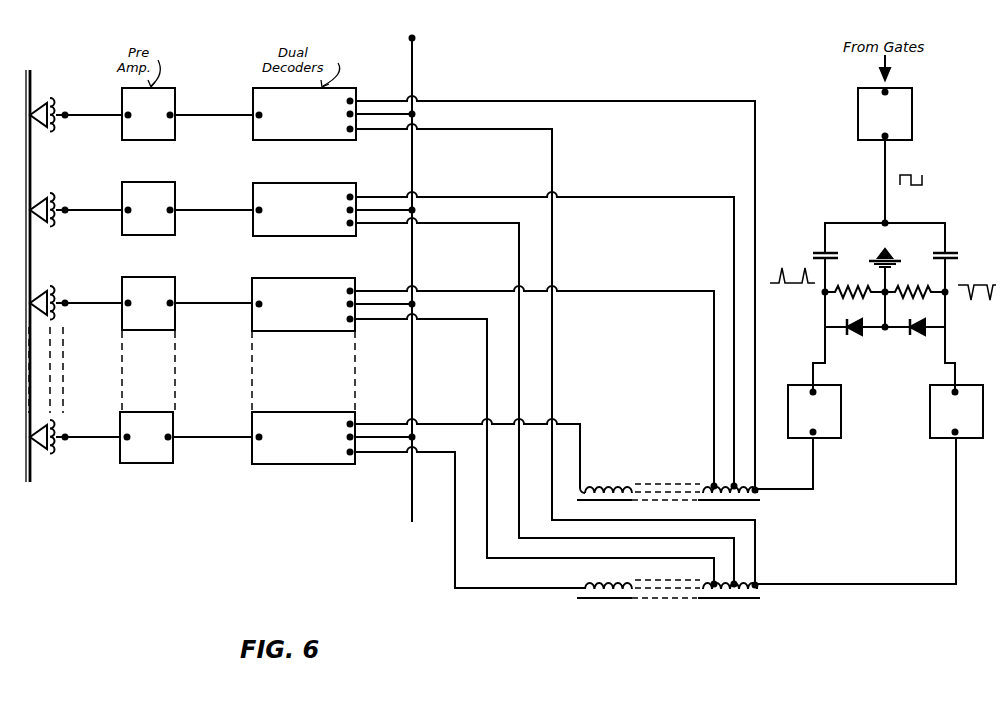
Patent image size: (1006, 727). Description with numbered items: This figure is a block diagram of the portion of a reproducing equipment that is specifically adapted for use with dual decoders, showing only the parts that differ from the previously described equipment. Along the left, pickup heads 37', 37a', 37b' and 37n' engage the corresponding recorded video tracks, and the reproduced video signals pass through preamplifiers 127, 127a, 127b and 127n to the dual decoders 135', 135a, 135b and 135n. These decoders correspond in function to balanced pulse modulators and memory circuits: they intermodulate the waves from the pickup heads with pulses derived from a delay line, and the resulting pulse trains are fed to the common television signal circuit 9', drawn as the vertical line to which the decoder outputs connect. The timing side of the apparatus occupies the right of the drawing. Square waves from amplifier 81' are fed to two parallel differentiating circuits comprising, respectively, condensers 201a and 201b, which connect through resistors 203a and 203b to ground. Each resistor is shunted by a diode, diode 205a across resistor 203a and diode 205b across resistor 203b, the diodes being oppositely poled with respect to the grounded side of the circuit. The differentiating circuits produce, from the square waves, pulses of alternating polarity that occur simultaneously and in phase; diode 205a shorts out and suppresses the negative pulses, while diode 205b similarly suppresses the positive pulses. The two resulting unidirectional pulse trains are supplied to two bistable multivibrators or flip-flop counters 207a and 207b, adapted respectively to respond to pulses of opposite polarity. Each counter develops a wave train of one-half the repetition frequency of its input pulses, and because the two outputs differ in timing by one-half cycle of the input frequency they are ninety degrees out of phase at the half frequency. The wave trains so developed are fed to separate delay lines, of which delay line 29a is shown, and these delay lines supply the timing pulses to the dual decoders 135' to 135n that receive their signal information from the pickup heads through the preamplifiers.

The pickup head 37' is at (76, 104).
The pickup head 37a' is at (76, 199).
The pickup head 37b' is at (76, 293).
The pickup head 37n' is at (75, 451).
The preamplifier 127 is at (137, 123).
The preamplifier 127a is at (134, 218).
The preamplifier 127b is at (134, 311).
The preamplifier 127n is at (133, 445).
The dual decoder 135' is at (304, 114).
The dual decoder 135a is at (290, 218).
The dual decoder 135b is at (290, 312).
The dual decoder 135n is at (290, 445).
The common television signal circuit 9' is at (424, 279).
The delay line 29a is at (612, 483).
The amplifier 81' is at (899, 113).
The condenser 201a is at (812, 252).
The condenser 201b is at (951, 252).
The resistor 203a is at (836, 297).
The resistor 203b is at (911, 288).
The diode 205a is at (849, 332).
The diode 205b is at (908, 321).
The bistable multivibrator 207a is at (841, 410).
The bistable multivibrator 207b is at (930, 425).